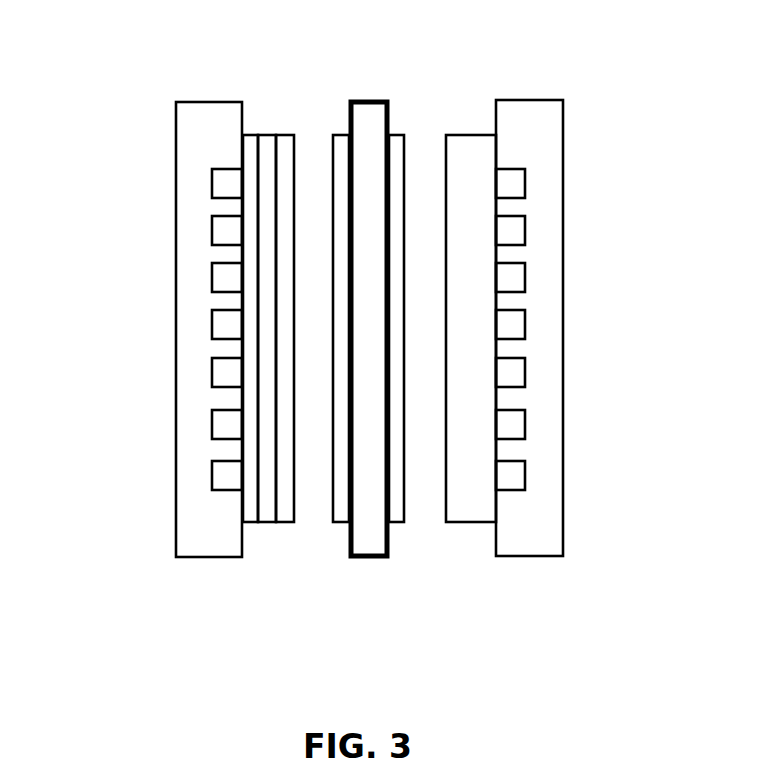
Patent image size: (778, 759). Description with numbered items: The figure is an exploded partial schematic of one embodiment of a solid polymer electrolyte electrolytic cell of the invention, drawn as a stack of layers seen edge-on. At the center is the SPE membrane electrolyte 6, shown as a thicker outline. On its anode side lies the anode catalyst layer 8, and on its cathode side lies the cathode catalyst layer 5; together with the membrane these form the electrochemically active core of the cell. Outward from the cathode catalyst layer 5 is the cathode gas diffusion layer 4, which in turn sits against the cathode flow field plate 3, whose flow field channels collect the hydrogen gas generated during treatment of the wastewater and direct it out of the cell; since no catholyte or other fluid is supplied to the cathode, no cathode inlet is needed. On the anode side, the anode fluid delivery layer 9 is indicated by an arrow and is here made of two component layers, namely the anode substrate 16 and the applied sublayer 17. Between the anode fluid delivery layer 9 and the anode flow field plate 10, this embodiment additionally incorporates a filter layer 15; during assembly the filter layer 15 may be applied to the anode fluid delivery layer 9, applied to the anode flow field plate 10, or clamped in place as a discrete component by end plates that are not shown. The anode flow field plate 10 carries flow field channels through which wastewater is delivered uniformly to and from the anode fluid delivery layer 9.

The cathode flow field plate 3 is at (528, 523).
The cathode gas diffusion layer 4 is at (457, 453).
The cathode catalyst layer 5 is at (394, 170).
The SPE membrane electrolyte 6 is at (367, 513).
The anode catalyst layer 8 is at (343, 490).
The anode fluid delivery layer 9 is at (196, 344).
The anode flow field plate 10 is at (210, 524).
The filter layer 15 is at (245, 155).
The anode substrate 16 is at (269, 348).
The applied sublayer 17 is at (281, 170).